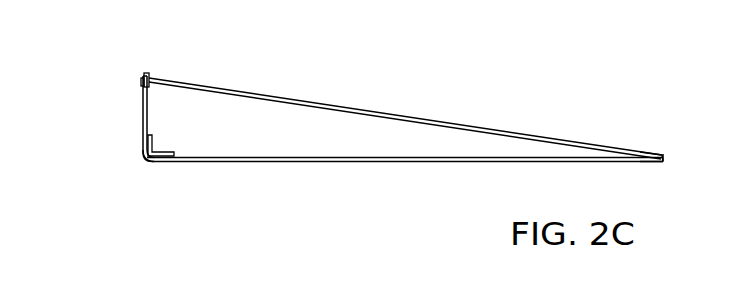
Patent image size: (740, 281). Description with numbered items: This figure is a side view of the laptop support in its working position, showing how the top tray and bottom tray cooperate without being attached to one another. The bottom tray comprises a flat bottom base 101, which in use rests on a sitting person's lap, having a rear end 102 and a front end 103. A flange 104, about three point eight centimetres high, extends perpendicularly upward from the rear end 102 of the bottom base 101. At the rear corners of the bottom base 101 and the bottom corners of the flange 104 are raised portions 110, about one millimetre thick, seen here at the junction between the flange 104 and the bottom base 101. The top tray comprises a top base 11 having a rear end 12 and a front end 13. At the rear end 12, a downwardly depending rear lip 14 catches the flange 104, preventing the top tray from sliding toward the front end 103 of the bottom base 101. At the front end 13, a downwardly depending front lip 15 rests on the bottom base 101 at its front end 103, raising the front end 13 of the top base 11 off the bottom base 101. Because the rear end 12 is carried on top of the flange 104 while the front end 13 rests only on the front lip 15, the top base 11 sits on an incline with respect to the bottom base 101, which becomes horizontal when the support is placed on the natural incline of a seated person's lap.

The top base 11 is at (293, 100).
The rear end 12 is at (150, 78).
The front end 13 is at (650, 152).
The rear lip 14 is at (143, 80).
The front lip 15 is at (663, 158).
The bottom base 101 is at (323, 162).
The rear end 102 is at (144, 160).
The front end 103 is at (663, 165).
The flange 104 is at (143, 118).
The raised portion 110 is at (162, 157).